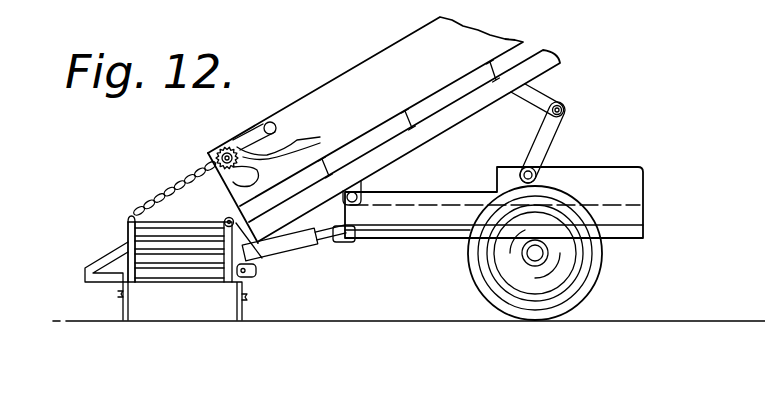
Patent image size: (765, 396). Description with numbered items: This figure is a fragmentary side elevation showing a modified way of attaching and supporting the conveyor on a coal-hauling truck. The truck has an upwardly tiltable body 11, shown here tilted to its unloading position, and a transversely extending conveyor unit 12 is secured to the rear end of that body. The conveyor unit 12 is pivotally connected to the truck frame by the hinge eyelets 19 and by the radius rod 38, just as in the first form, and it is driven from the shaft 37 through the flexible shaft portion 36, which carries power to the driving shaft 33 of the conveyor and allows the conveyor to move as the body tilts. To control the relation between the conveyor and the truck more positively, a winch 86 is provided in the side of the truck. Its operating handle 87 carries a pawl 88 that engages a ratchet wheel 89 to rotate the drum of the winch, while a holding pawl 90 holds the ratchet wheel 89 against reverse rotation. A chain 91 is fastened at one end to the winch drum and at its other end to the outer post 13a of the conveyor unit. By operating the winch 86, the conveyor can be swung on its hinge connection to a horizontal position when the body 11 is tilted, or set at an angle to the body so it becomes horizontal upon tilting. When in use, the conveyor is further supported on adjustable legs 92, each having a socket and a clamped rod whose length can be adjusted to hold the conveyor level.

The upwardly tiltable body 11 is at (333, 80).
The conveyor unit 12 is at (167, 268).
The outer post 13a is at (127, 230).
The hinge eyelets 19 is at (226, 218).
The driving shaft 33 is at (249, 280).
The flexible shaft portion 36 is at (288, 258).
The shaft 37 is at (410, 238).
The radius rod 38 is at (312, 243).
The winch 86 is at (224, 146).
The operating handle 87 is at (263, 122).
The pawl 88 is at (283, 150).
The ratchet wheel 89 is at (262, 180).
The holding pawl 90 is at (298, 152).
The chain 91 is at (162, 185).
The adjustable legs 92 is at (122, 310).